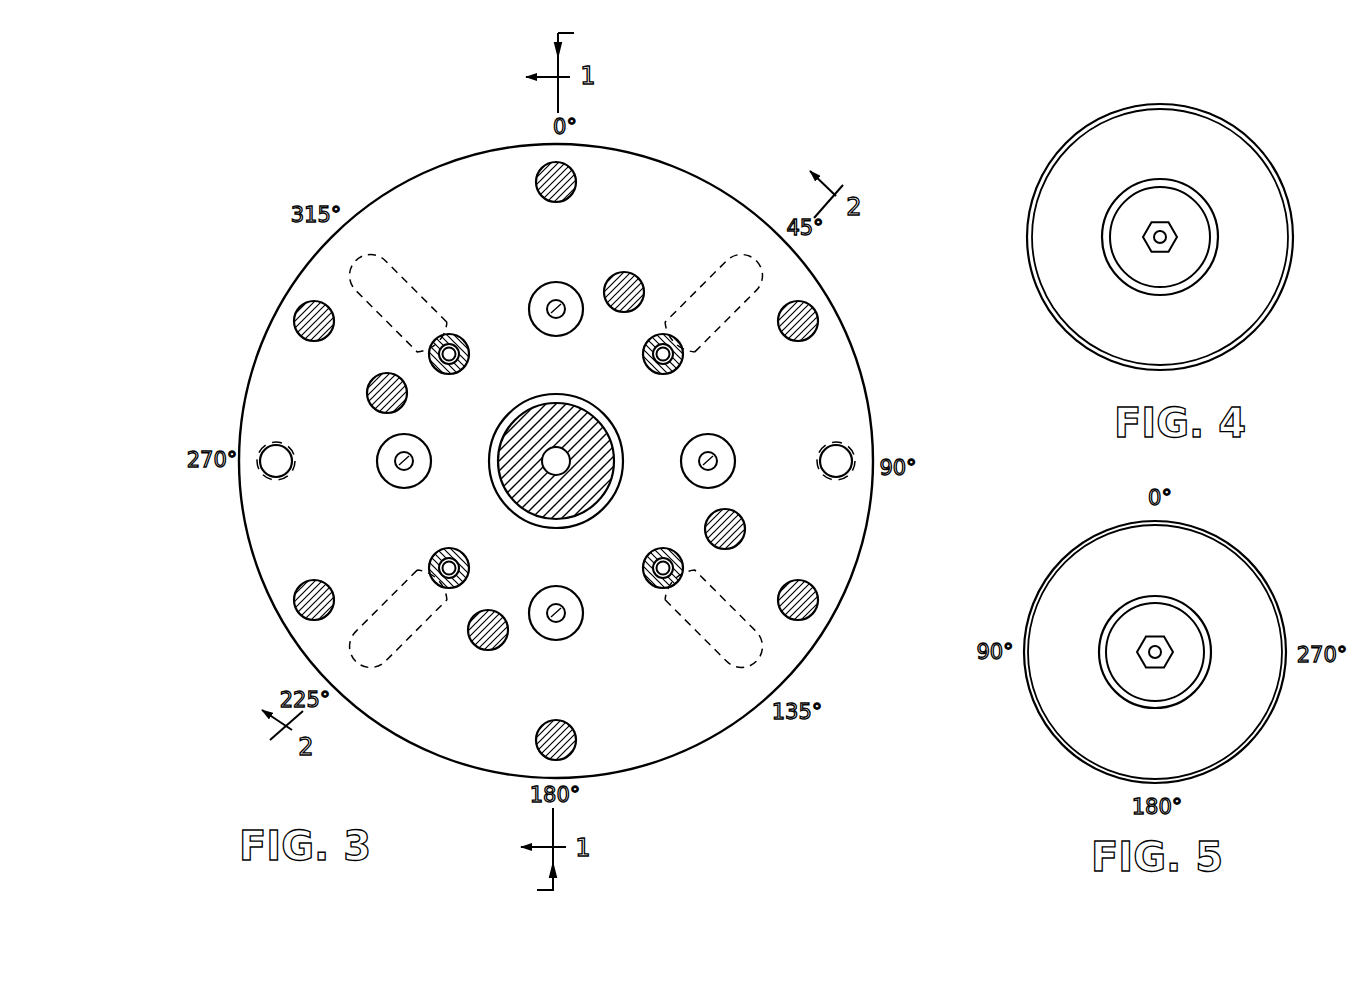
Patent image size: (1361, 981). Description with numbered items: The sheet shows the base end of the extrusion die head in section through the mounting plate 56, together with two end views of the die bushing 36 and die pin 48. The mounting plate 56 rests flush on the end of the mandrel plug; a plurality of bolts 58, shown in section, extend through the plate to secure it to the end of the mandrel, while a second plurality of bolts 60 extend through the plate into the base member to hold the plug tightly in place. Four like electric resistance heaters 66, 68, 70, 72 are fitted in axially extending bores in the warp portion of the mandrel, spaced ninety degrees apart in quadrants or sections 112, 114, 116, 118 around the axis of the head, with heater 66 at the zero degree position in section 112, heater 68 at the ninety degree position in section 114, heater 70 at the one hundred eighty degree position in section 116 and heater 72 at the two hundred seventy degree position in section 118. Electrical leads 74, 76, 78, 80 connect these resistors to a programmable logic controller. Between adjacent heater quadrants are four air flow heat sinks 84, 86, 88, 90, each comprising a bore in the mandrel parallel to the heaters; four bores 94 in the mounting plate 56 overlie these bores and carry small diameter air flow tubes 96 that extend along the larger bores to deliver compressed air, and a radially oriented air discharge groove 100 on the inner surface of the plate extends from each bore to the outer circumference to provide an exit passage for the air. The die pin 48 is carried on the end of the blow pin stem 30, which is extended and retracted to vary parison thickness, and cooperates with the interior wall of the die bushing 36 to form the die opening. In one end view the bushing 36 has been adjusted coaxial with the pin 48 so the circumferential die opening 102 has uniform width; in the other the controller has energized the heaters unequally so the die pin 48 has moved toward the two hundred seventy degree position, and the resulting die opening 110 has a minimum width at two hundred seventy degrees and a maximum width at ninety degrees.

In FIG. 3, the blow pin stem 30 is at (593, 452).
In FIG. 4, the die bushing 36 is at (1218, 172).
In FIG. 5, the die bushing 36 is at (1213, 587).
In FIG. 4, the die pin 48 is at (1187, 250).
In FIG. 5, the die pin 48 is at (1186, 665).
In FIG. 3, the mounting plate 56 is at (683, 212).
In FIG. 3, the bolts 58 is at (628, 275).
In FIG. 3, the bolts 60 is at (566, 170).
In FIG. 3, the electric resistance heater 66 is at (538, 290).
In FIG. 3, the electric resistance heater 68 is at (735, 455).
In FIG. 3, the electric resistance heater 70 is at (559, 621).
In FIG. 3, the electric resistance heater 72 is at (378, 468).
In FIG. 3, the electrical lead 74 is at (549, 305).
In FIG. 3, the electrical lead 76 is at (717, 466).
In FIG. 3, the electrical lead 78 is at (572, 636).
In FIG. 3, the electrical lead 80 is at (395, 458).
In FIG. 3, the air flow heat sink 84 is at (690, 340).
In FIG. 3, the air flow heat sink 86 is at (690, 585).
In FIG. 3, the air flow heat sink 88 is at (425, 578).
In FIG. 3, the air flow heat sink 90 is at (420, 338).
In FIG. 3, the bores 94 is at (673, 333).
In FIG. 3, the air flow tubes 96 is at (668, 337).
In FIG. 3, the air discharge groove 100 is at (765, 262).
In FIG. 4, the die opening 102 is at (1138, 192).
In FIG. 5, the die opening 110 is at (1132, 598).
In FIG. 3, the section 112 is at (600, 37).
In FIG. 3, the section 114 is at (925, 467).
In FIG. 3, the section 116 is at (510, 890).
In FIG. 3, the section 118 is at (185, 461).